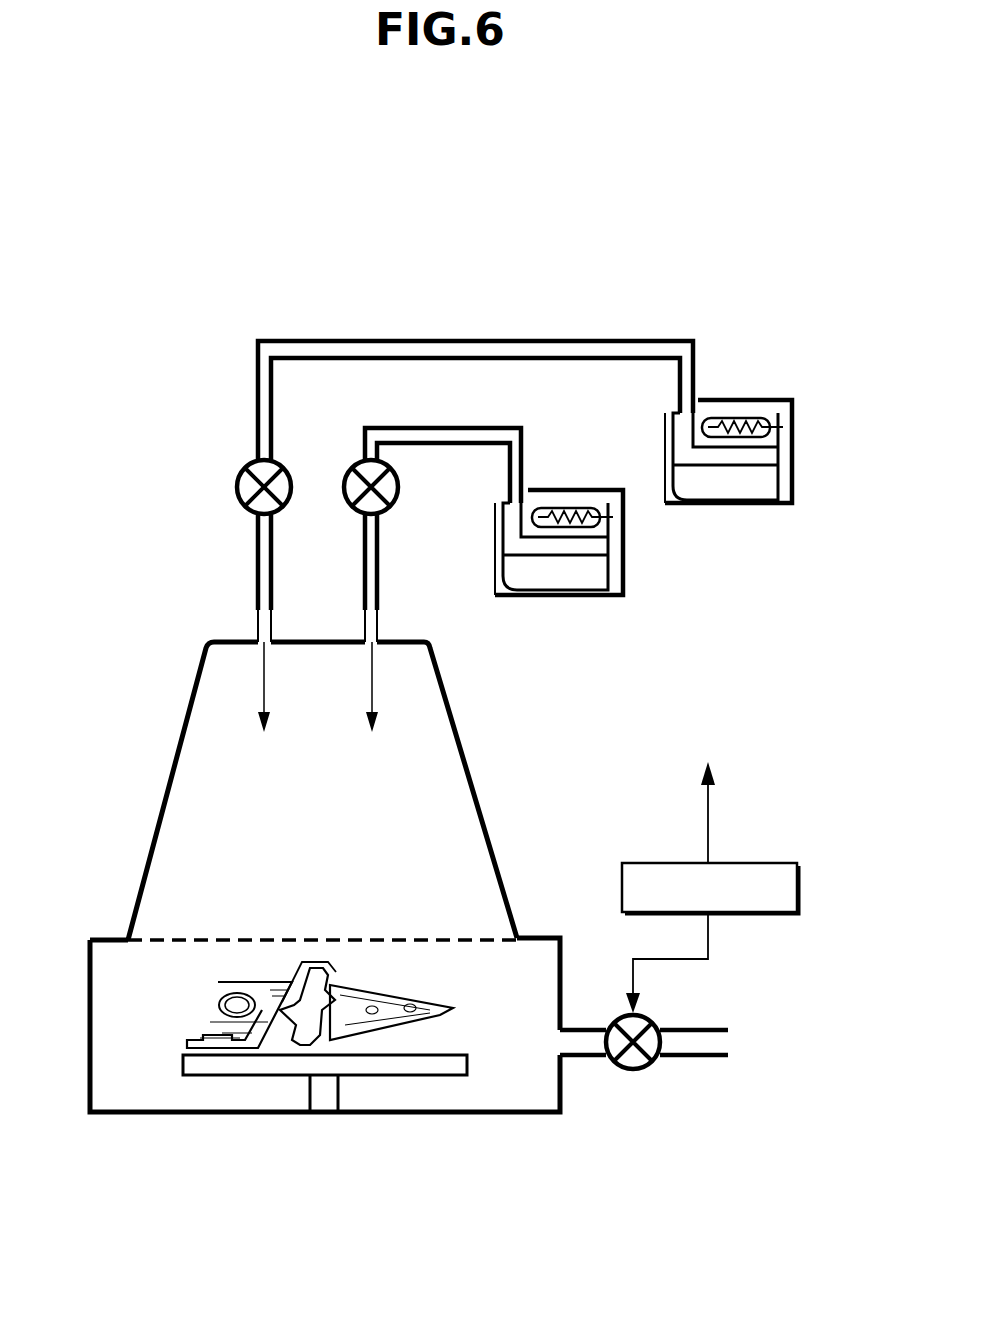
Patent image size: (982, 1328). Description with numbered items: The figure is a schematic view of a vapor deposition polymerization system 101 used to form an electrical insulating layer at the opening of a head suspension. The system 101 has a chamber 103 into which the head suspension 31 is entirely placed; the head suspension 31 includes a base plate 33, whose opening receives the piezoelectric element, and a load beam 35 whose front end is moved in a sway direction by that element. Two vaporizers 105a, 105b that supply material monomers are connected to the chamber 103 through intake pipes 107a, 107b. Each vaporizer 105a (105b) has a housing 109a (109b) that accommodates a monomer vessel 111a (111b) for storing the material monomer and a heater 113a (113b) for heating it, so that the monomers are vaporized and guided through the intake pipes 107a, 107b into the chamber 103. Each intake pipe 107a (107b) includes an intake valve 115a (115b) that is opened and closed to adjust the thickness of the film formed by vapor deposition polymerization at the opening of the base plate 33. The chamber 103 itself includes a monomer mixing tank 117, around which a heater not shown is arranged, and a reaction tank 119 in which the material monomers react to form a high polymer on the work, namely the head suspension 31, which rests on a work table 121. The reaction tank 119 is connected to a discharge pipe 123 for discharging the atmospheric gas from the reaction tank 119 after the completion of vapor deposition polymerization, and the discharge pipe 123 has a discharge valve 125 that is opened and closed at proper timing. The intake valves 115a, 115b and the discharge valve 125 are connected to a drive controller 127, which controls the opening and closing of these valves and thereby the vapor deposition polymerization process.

The vapor deposition polymerization system 101 is at (560, 258).
The chamber 103 is at (494, 756).
The vaporizer 105a is at (570, 462).
The vaporizer 105b is at (738, 370).
The intake pipe 107a is at (427, 428).
The intake pipe 107b is at (430, 339).
The housing 109a is at (537, 598).
The housing 109b is at (704, 507).
The monomer vessel 111a is at (612, 598).
The monomer vessel 111b is at (779, 507).
The heater 113a is at (566, 510).
The heater 113b is at (740, 425).
The intake valve 115a is at (396, 497).
The intake valve 115b is at (283, 478).
The monomer mixing tank 117 is at (498, 855).
The reaction tank 119 is at (565, 966).
The work table 121 is at (438, 1076).
The discharge pipe 123 is at (690, 1028).
The discharge valve 125 is at (648, 1065).
The drive controller 127 is at (733, 862).
The head suspension 31 is at (410, 984).
The base plate 33 is at (206, 1005).
The load beam 35 is at (355, 1020).